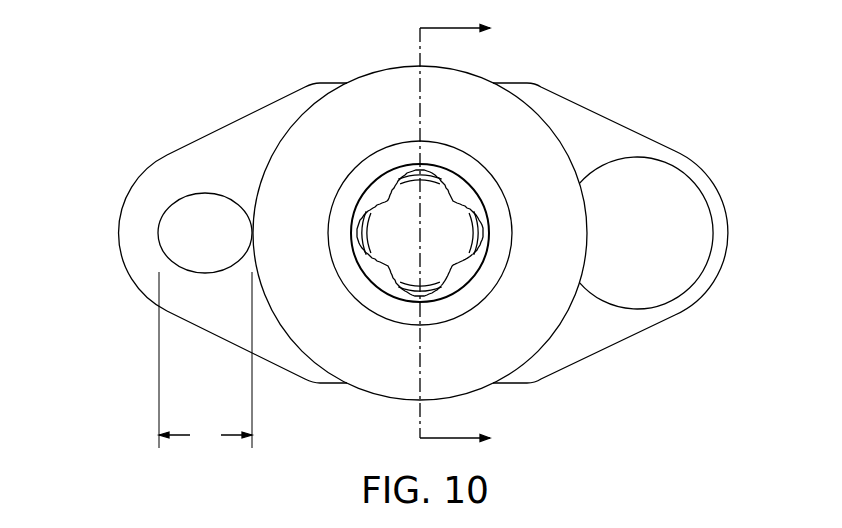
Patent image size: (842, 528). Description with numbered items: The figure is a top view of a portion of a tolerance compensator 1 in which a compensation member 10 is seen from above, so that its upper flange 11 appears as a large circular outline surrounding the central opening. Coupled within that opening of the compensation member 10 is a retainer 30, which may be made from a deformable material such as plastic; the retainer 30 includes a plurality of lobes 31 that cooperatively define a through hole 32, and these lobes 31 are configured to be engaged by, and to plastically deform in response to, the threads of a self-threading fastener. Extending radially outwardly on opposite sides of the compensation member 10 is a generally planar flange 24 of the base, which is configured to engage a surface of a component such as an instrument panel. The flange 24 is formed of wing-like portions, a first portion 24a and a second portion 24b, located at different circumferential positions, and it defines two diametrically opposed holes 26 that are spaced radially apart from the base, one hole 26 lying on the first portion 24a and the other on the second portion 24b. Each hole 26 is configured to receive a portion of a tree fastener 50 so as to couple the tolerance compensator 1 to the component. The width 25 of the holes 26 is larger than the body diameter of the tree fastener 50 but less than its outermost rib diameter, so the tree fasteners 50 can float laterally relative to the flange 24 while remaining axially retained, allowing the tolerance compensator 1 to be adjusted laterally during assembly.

The tolerance compensator 1 is at (600, 78).
The compensation member 10 is at (318, 133).
The upper flange 11 is at (376, 412).
The flange 24 is at (225, 150).
The first portion 24a is at (172, 167).
The second portion 24b is at (597, 148).
The width 25 is at (205, 361).
The hole 26 is at (168, 248).
The retainer 30 is at (387, 186).
The lobes 31 is at (458, 277).
The through hole 32 is at (437, 217).
The tree fastener 50 is at (648, 215).